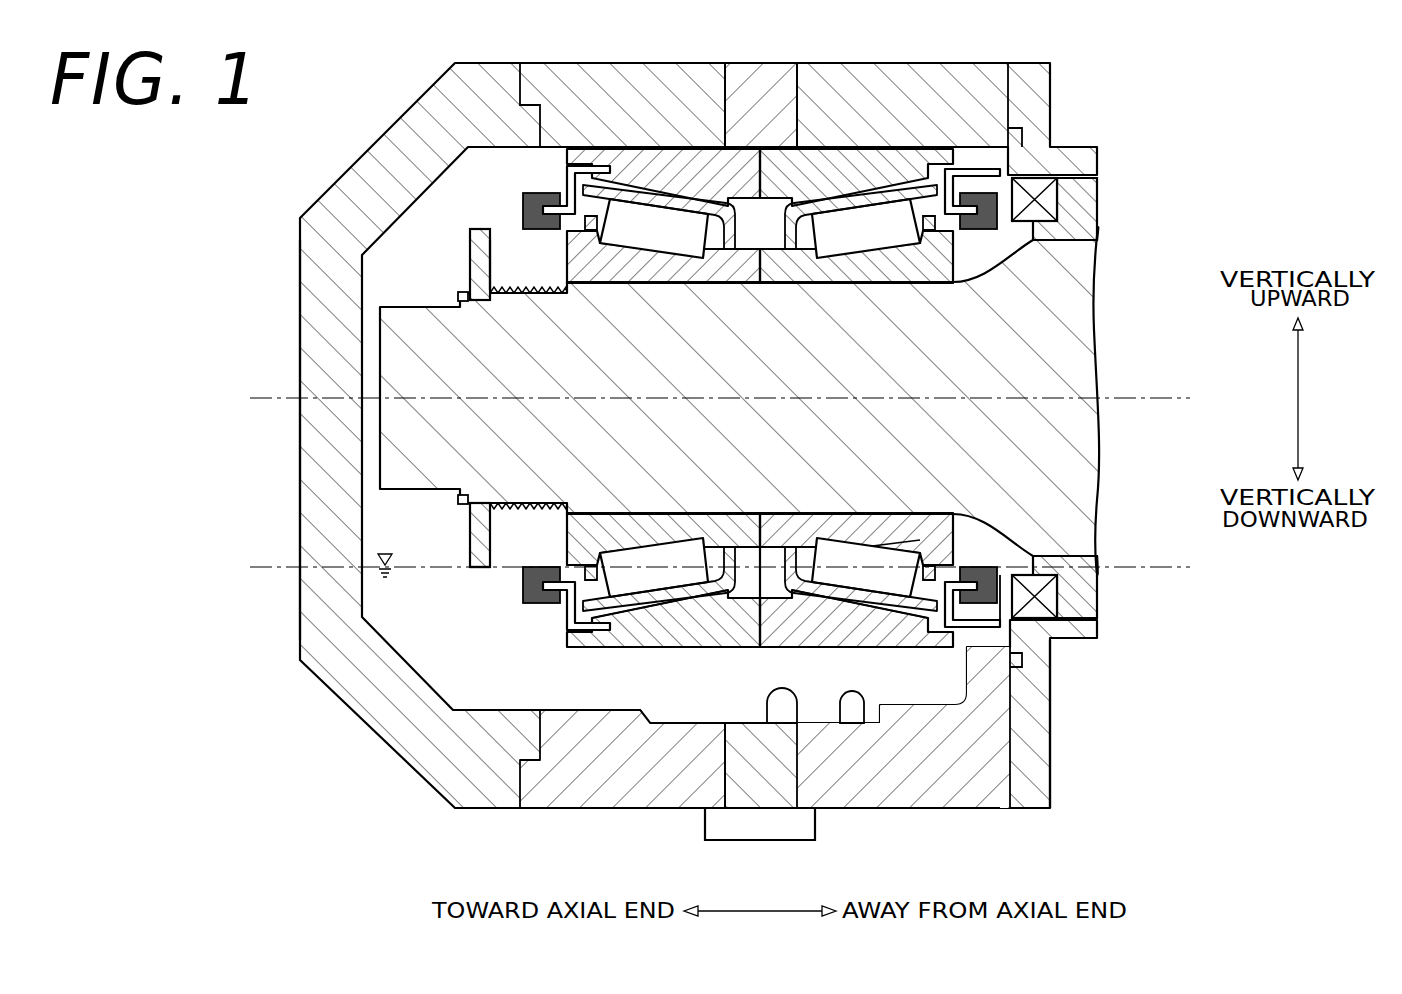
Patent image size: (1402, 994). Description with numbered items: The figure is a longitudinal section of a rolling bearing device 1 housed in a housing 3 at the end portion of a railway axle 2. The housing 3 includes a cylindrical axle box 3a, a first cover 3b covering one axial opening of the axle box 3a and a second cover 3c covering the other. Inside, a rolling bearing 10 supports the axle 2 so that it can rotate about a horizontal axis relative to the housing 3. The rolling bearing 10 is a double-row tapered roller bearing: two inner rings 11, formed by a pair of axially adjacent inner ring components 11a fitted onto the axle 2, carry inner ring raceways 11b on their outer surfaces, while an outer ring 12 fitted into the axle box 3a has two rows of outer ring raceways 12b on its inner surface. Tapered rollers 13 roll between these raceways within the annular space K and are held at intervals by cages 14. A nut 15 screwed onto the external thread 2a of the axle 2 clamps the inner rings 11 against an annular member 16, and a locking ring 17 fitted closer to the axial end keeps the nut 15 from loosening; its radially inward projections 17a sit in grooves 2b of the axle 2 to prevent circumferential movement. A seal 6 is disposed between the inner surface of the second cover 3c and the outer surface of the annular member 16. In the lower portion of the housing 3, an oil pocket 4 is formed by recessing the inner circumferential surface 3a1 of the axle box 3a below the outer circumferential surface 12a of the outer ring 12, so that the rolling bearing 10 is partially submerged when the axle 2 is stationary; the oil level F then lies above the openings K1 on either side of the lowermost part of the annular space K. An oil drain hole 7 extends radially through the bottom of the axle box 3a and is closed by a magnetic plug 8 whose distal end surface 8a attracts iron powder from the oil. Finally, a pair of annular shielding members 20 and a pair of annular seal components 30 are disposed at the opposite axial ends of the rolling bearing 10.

The rolling bearing device 1 is at (455, 705).
The railway axle 2 is at (758, 400).
The external thread 2a is at (545, 502).
The grooves 2b is at (462, 291).
The housing 3 is at (678, 477).
The axle box 3a is at (628, 812).
The inner circumferential surface 3a1 is at (858, 727).
The first cover 3b is at (300, 598).
The second cover 3c is at (1052, 745).
The oil pocket 4 is at (612, 712).
The seal 6 is at (1048, 612).
The oil drain hole 7 is at (725, 815).
The magnetic plug 8 is at (756, 817).
The distal end surface 8a is at (795, 725).
The rolling bearing 10 is at (742, 427).
The inner rings 11 is at (771, 398).
The inner ring components 11a is at (635, 540).
The inner ring raceways 11b is at (690, 543).
The outer ring 12 is at (760, 425).
The outer circumferential surface 12a is at (798, 612).
The outer ring raceways 12b is at (700, 605).
The tapered rollers 13 is at (645, 552).
The cages 14 is at (732, 546).
The nut 15 is at (478, 569).
The annular member 16 is at (1097, 562).
The locking ring 17 is at (454, 398).
The projections 17a is at (484, 302).
The shielding members 20 is at (552, 618).
The seal components 30 is at (520, 592).
The annular space K is at (758, 590).
The openings K1 is at (560, 535).
The oil level F is at (398, 560).